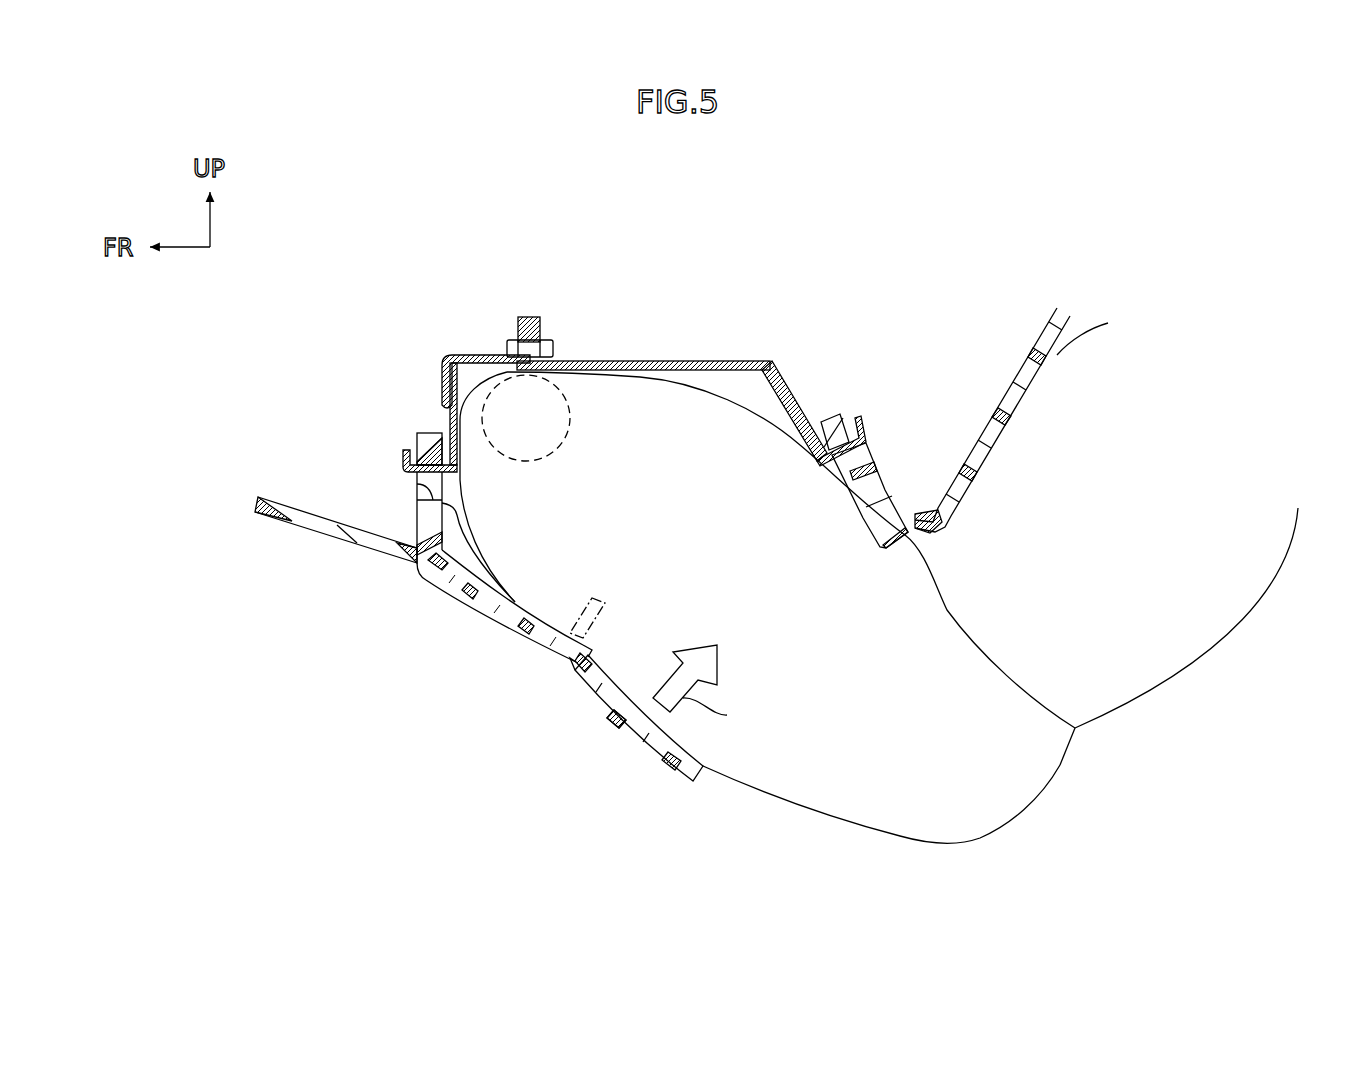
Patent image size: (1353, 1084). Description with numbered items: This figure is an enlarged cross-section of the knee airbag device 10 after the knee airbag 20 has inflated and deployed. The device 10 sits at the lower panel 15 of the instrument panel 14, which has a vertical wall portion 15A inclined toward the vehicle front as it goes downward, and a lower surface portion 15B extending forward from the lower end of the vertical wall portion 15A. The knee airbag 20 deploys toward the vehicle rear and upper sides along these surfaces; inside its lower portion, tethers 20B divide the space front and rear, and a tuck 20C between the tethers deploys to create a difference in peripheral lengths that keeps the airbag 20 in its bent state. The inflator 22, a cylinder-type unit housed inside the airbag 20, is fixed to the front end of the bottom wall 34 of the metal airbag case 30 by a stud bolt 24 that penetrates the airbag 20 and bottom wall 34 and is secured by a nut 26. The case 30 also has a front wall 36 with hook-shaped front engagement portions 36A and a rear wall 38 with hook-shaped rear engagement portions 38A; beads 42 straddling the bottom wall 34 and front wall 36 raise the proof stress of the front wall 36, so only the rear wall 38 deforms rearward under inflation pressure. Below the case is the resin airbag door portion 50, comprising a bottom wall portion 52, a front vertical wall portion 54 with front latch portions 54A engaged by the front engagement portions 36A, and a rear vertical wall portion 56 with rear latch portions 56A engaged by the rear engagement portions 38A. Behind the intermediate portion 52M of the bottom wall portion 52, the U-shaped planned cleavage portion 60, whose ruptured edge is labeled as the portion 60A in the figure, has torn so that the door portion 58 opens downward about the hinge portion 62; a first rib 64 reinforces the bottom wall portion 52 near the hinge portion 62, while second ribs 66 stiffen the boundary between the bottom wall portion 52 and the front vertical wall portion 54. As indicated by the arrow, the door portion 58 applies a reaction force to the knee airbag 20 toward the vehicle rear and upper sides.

The knee airbag device 10 is at (740, 190).
The instrument panel 14 is at (1026, 296).
The lower panel 15 is at (645, 460).
The vertical wall portion 15A is at (1030, 345).
The lower surface portion 15B is at (297, 532).
The knee airbag 20 is at (1165, 690).
The tether 20B is at (1037, 707).
The tuck 20C is at (977, 843).
The inflator 22 is at (590, 355).
The stud bolt 24 is at (528, 314).
The nut 26 is at (552, 344).
The airbag case 30 is at (750, 297).
The bottom wall 34 is at (577, 360).
The front wall 36 is at (446, 417).
The front engagement portion 36A is at (403, 455).
The rear wall 38 is at (798, 363).
The rear engagement portion 38A is at (862, 424).
The bead 42 is at (447, 353).
The airbag door portion 50 is at (430, 622).
The bottom wall portion 52 is at (483, 622).
The intermediate portion 52M is at (565, 652).
The front vertical wall portion 54 is at (425, 430).
The front latch portion 54A is at (415, 483).
The rear vertical wall portion 56 is at (832, 410).
The rear latch portion 56A is at (860, 468).
The door portion 58 is at (615, 718).
The planned cleavage portion 60 is at (660, 772).
The door main body 60A is at (707, 770).
The hinge portion 62 is at (641, 587).
The first rib 64 is at (606, 598).
The second rib 66 is at (430, 563).